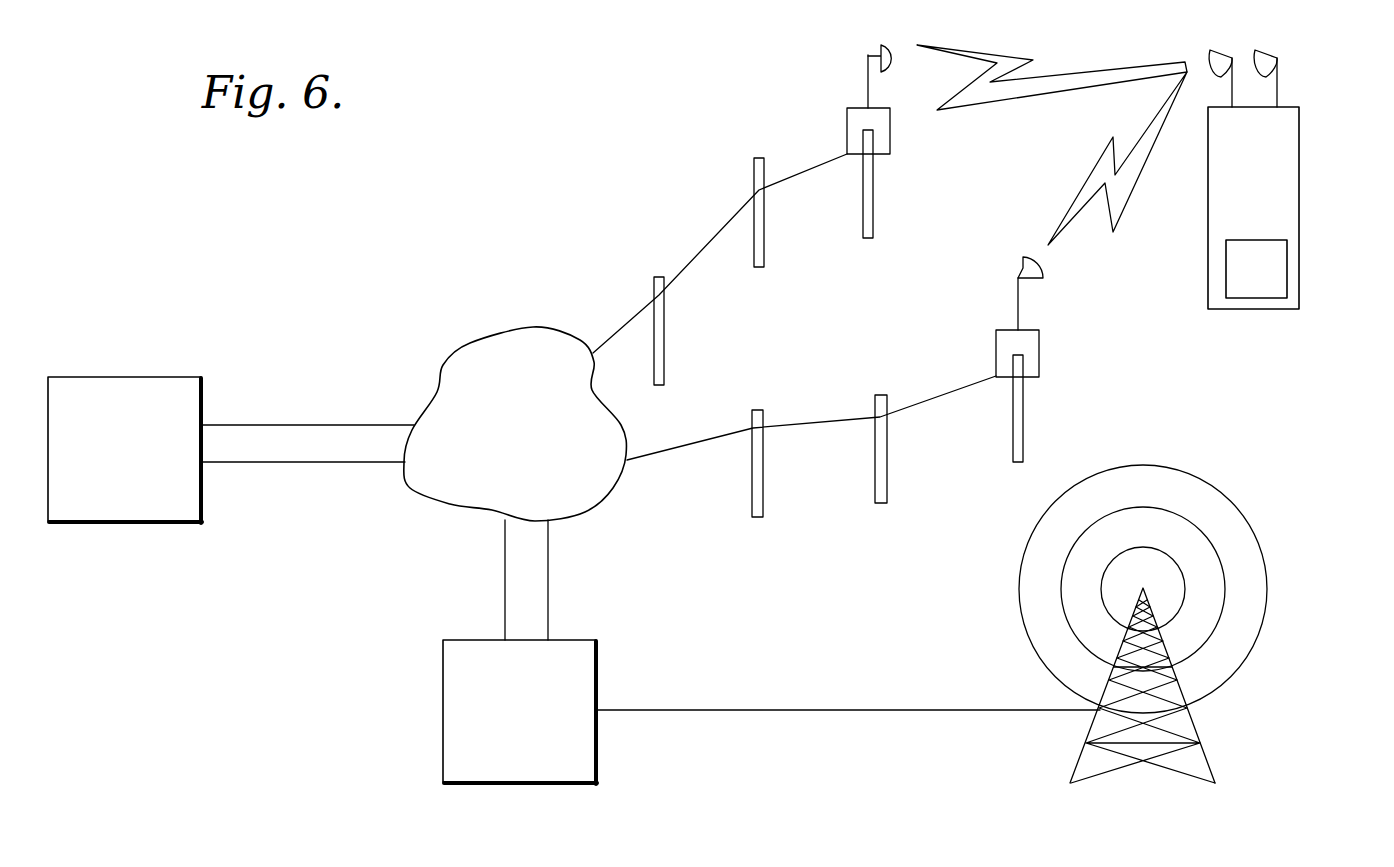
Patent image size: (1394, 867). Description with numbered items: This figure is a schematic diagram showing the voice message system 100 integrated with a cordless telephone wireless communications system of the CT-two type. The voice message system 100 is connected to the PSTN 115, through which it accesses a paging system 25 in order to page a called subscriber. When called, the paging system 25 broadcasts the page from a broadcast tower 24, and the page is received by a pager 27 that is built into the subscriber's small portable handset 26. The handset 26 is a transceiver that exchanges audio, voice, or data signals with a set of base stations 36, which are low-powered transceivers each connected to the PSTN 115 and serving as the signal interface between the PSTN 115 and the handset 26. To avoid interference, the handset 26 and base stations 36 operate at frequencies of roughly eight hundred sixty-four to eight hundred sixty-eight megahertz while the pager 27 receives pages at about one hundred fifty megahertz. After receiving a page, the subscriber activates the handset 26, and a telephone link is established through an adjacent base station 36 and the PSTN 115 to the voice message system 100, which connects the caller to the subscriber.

The voice message system 100 is at (134, 508).
The PSTN 115 is at (534, 471).
The paging system 25 is at (495, 762).
The base stations 36 is at (847, 118).
The handset 26 is at (1293, 179).
The pager 27 is at (1287, 270).
The broadcast tower 24 is at (1210, 760).